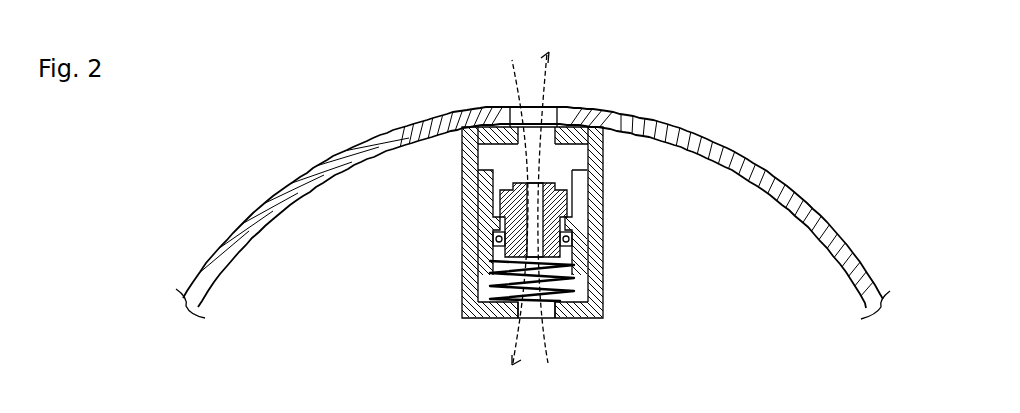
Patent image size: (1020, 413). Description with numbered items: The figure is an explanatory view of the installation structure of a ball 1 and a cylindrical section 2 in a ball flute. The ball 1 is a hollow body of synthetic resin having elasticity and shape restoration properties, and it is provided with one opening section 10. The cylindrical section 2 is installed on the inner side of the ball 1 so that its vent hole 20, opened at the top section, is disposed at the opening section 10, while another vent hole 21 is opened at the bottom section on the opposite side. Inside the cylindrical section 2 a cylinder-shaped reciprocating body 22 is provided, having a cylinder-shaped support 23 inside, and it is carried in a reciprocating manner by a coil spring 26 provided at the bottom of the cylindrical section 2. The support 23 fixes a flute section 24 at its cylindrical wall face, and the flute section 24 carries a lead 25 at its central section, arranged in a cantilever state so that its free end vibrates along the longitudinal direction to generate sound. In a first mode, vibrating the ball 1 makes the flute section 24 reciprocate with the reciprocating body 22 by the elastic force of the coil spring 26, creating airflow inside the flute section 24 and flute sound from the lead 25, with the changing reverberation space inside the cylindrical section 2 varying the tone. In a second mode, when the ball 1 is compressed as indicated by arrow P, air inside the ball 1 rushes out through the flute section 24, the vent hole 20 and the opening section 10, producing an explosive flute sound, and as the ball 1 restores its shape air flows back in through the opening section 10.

The ball 1 is at (770, 170).
The arrow P is at (270, 197).
The opening section 10 is at (508, 108).
The cylindrical section 2 is at (605, 189).
The vent hole 20 is at (557, 127).
The vent hole 21 is at (556, 318).
The reciprocating body 22 is at (500, 178).
The support 23 is at (487, 241).
The flute section 24 is at (480, 312).
The lead 25 is at (604, 234).
The coil spring 26 is at (604, 288).